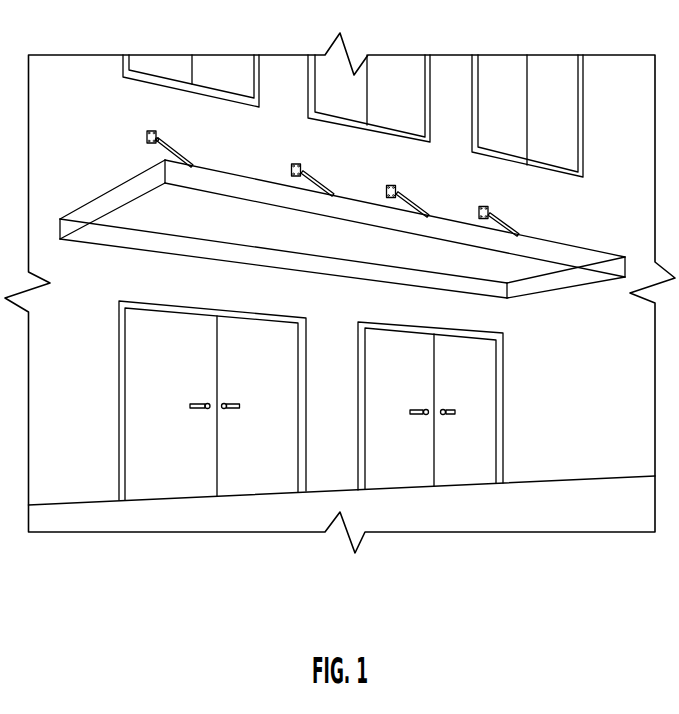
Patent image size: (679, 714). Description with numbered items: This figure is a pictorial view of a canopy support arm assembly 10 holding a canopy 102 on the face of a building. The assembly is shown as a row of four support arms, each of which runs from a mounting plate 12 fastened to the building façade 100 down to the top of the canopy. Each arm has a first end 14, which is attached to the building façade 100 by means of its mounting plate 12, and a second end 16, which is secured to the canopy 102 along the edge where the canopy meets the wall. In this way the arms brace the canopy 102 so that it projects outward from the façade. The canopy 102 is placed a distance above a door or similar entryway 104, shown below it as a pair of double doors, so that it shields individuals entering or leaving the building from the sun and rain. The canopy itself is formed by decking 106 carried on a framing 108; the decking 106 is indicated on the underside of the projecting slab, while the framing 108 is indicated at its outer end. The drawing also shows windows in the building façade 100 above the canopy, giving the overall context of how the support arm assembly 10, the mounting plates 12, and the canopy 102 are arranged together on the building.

The canopy support arm assembly 10 is at (170, 145).
The mounting plates 12 is at (152, 132).
The first end 14 is at (157, 145).
The second end 16 is at (207, 167).
The building façade 100 is at (443, 78).
The canopy 102 is at (342, 232).
The entryway 104 is at (125, 368).
The decking 106 is at (518, 267).
The framing 108 is at (588, 262).